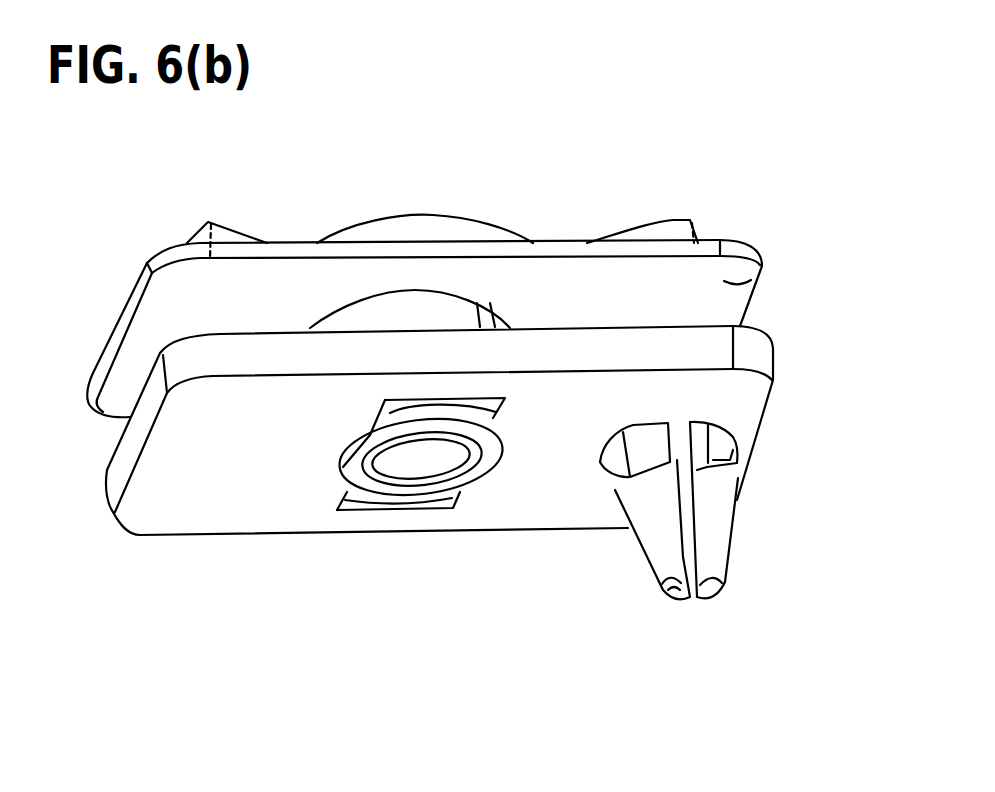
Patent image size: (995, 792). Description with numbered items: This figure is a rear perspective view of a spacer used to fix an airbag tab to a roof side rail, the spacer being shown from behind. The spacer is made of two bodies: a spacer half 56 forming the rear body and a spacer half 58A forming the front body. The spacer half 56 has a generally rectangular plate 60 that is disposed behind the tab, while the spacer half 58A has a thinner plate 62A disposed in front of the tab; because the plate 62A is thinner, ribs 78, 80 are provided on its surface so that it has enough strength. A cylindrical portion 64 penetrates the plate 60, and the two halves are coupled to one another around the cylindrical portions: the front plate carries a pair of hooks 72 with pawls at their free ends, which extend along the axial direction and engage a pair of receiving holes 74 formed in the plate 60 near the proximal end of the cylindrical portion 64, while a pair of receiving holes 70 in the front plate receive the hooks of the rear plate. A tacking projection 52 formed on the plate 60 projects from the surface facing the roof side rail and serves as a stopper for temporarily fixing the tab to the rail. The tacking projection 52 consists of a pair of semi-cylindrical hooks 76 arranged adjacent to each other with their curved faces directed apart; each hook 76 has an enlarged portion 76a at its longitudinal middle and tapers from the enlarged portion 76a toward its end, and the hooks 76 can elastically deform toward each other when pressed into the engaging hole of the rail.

The tacking projection 52 is at (692, 612).
The spacer half 56 is at (104, 505).
The spacer half 58A is at (113, 307).
The plate 60 is at (200, 503).
The plate 62A is at (763, 268).
The cylindrical portion 64 is at (411, 460).
The receiving holes 70 is at (723, 510).
The hooks 72 is at (388, 290).
The receiving holes 74 is at (495, 406).
The semi-cylindrical hooks 76 is at (652, 540).
The enlarged portion 76a is at (620, 490).
The rib 78 is at (467, 222).
The rib 80 is at (216, 220).